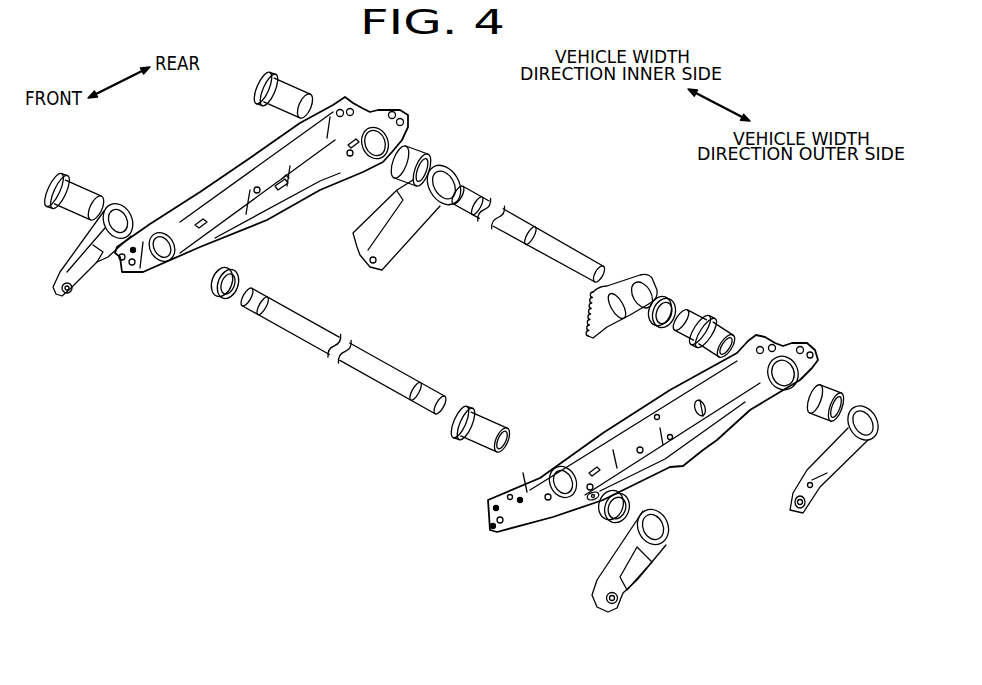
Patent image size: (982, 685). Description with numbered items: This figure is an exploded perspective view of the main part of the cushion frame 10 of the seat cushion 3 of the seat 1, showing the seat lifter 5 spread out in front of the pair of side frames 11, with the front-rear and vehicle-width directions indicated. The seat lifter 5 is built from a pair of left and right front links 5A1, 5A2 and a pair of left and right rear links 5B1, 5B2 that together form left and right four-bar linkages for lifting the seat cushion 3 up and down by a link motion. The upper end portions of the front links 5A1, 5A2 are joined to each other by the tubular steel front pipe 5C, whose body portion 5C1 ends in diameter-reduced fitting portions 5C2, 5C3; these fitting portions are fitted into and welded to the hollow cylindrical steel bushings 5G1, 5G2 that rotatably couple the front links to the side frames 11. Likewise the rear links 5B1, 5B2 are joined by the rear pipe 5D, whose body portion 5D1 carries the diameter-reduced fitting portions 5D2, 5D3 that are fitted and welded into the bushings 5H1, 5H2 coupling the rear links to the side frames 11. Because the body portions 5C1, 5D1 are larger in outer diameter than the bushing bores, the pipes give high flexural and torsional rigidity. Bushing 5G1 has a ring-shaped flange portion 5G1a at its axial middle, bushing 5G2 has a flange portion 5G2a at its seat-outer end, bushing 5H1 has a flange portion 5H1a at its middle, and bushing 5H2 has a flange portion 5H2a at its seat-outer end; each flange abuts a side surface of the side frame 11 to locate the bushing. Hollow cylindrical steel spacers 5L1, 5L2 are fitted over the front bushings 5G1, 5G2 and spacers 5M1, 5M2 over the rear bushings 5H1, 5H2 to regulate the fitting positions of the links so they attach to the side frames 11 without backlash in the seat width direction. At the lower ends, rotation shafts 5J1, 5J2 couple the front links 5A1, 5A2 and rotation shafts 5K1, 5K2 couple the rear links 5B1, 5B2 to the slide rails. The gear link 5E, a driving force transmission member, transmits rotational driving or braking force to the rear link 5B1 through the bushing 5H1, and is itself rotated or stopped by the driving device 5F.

The vehicle 1 is at (744, 219).
The seat cushion 3 is at (778, 201).
The seat lifter 5 is at (286, 436).
The front link 5A1 is at (653, 558).
The front link 5A2 is at (95, 275).
The rear link 5B1 is at (823, 467).
The rear link 5B2 is at (410, 236).
The front pipe 5C is at (333, 374).
The body portion 5C1 is at (377, 376).
The fitting portion 5C2 is at (425, 407).
The fitting portion 5C3 is at (246, 312).
The rear pipe 5D is at (528, 210).
The body portion 5D1 is at (500, 203).
The fitting portion 5D2 is at (572, 253).
The fitting portion 5D3 is at (463, 187).
The gear link 5E is at (634, 282).
The driving device 5F is at (633, 280).
The bushing 5G1 is at (499, 405).
The flange portion 5G1a is at (484, 408).
The bushing 5G2 is at (95, 173).
The flange portion 5G2a is at (72, 173).
The bushing 5H1 is at (716, 313).
The flange portion 5H1a is at (710, 317).
The bushing 5H2 is at (251, 82).
The flange portion 5H2a is at (229, 89).
The rotation shaft 5J1 is at (619, 598).
The rotation shaft 5J2 is at (76, 317).
The rotation shaft 5K1 is at (808, 507).
The rotation shaft 5K2 is at (375, 263).
The spacer 5L1 is at (604, 516).
The spacer 5L2 is at (212, 284).
The spacer 5M1 is at (667, 295).
The spacer 5M2 is at (412, 153).
The arm member 10 is at (242, 170).
The side frame 11 is at (466, 314).